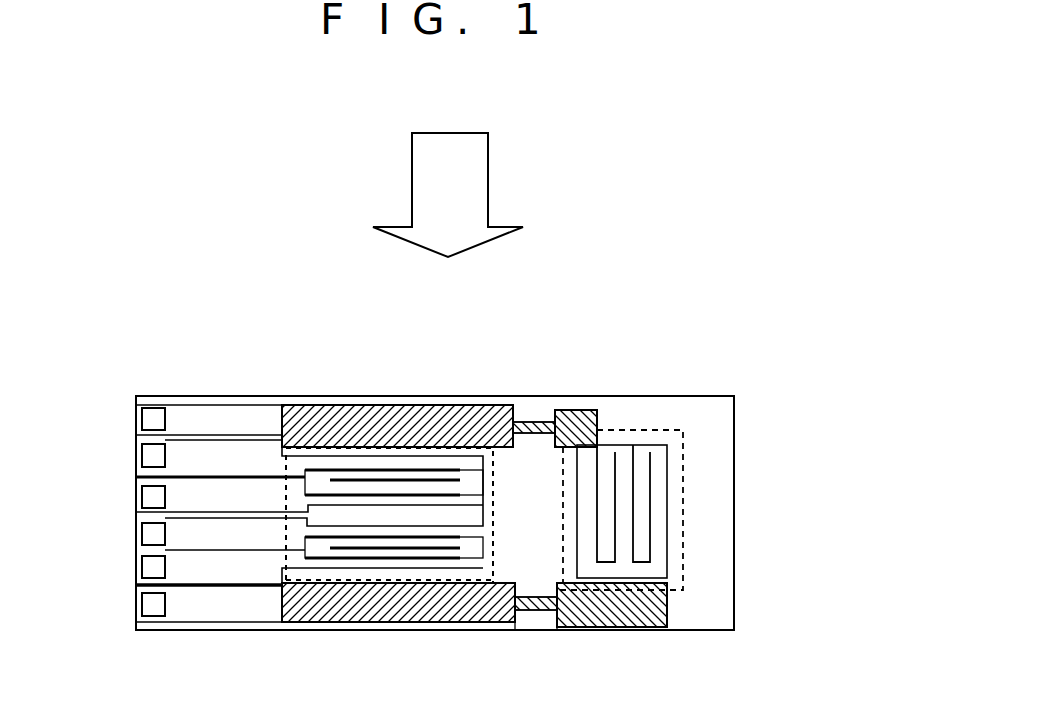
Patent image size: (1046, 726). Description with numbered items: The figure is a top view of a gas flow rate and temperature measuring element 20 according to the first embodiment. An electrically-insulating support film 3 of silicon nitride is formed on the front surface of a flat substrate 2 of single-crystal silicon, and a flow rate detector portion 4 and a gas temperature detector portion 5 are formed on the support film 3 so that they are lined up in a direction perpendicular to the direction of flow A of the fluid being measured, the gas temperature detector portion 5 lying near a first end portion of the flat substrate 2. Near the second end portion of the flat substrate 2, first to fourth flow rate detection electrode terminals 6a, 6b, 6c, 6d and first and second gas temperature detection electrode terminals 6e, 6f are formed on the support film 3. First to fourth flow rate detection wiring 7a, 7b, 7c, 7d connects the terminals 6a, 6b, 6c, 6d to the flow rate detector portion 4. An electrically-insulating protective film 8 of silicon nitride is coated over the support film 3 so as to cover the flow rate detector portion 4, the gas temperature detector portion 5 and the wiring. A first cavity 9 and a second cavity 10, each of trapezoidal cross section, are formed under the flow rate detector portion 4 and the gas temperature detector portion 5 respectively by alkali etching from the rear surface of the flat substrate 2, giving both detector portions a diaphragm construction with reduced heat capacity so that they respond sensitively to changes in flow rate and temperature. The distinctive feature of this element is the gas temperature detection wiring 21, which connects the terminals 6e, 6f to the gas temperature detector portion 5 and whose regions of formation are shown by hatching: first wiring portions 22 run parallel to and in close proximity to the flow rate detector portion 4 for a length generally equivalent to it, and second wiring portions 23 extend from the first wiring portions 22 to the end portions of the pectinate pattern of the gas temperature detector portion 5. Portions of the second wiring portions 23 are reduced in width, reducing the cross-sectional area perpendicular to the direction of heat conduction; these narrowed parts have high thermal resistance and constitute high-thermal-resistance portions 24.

The flat substrate 2 is at (471, 495).
The electrically-insulating support film 3 is at (471, 495).
The electrically-insulating protective film 8 is at (725, 413).
The flow rate detector portion 4 is at (368, 470).
The gas temperature detector portion 5 is at (618, 452).
The first flow rate detection electrode terminal 6a is at (148, 453).
The second flow rate detection electrode terminal 6b is at (148, 494).
The third flow rate detection electrode terminal 6c is at (148, 532).
The fourth flow rate detection electrode terminal 6d is at (148, 564).
The first gas temperature detection electrode terminal 6e is at (148, 415).
The second gas temperature detection electrode terminal 6f is at (148, 602).
The first flow rate detection wiring 7a is at (228, 453).
The second flow rate detection wiring 7b is at (197, 493).
The third flow rate detection wiring 7c is at (192, 538).
The fourth flow rate detection wiring 7d is at (223, 568).
The first cavity 9 is at (300, 603).
The second cavity 10 is at (662, 428).
The gas flow rate and temperature measuring element 20 is at (228, 337).
The gas temperature detection wiring 21 is at (318, 406).
The first wiring portions 22 is at (468, 405).
The second wiring portions 23 is at (570, 408).
The high-thermal-resistance portions 24 is at (533, 422).
The direction of flow A is at (500, 182).